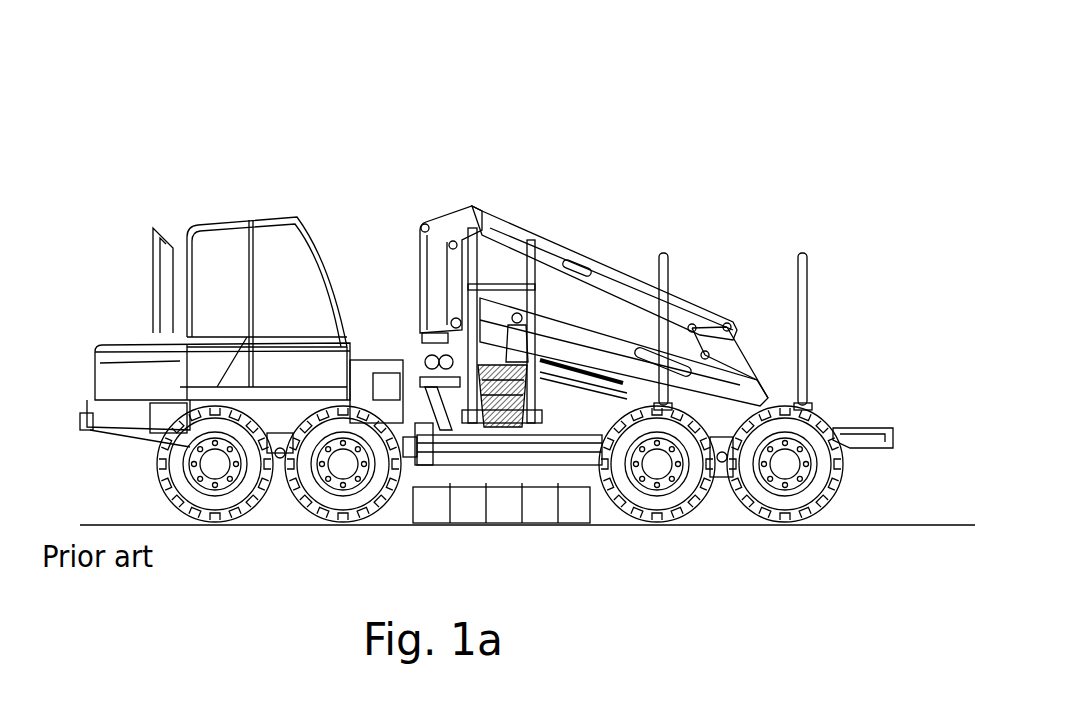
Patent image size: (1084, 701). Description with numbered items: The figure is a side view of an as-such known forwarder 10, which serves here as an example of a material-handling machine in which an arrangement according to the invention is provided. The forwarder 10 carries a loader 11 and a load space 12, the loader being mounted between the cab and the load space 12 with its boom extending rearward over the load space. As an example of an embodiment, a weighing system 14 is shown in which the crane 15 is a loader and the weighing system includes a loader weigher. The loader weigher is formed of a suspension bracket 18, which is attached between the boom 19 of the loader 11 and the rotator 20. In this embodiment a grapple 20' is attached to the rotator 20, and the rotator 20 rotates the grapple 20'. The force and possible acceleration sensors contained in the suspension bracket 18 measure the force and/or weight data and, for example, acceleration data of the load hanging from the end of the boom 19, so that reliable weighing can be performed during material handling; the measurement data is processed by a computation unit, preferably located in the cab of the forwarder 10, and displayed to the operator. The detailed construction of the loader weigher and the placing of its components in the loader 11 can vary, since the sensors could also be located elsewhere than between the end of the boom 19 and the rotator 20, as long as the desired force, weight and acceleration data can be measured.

The forwarder 10 is at (230, 130).
The loader 11 is at (452, 220).
The load space 12 is at (852, 320).
The weighing system 14 is at (808, 60).
The crane 15 is at (633, 207).
The suspension bracket 18 is at (503, 330).
The boom 19 is at (580, 345).
The rotator 20 is at (419, 211).
The grapple 20' is at (386, 270).